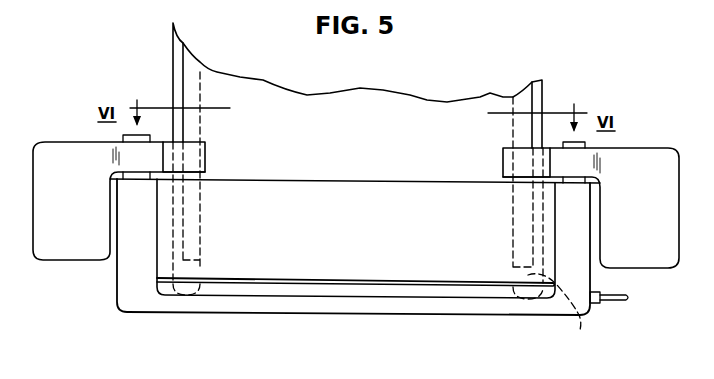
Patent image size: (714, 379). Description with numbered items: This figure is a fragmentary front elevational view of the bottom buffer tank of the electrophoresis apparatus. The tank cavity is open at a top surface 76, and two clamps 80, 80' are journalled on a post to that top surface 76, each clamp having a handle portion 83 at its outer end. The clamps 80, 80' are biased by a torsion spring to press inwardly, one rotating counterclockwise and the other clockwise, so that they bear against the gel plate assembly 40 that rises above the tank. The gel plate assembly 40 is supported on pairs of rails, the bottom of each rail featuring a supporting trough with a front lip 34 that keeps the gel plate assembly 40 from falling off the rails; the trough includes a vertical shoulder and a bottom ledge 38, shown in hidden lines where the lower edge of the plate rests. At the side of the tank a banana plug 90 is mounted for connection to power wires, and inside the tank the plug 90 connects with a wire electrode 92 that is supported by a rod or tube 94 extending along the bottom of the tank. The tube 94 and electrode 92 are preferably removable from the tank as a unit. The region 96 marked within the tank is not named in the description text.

The front lip 34 is at (565, 313).
The bottom ledge 38 is at (528, 293).
The gel plate assembly 40 is at (417, 118).
The top surface 76 is at (350, 182).
The clamp 80 is at (214, 154).
The clamp 80' is at (500, 154).
The handle portion 83 is at (48, 155).
The banana plug 90 is at (613, 303).
The wire electrode 92 is at (421, 280).
The rod or tube 94 is at (303, 285).
The cavity 96 is at (365, 236).